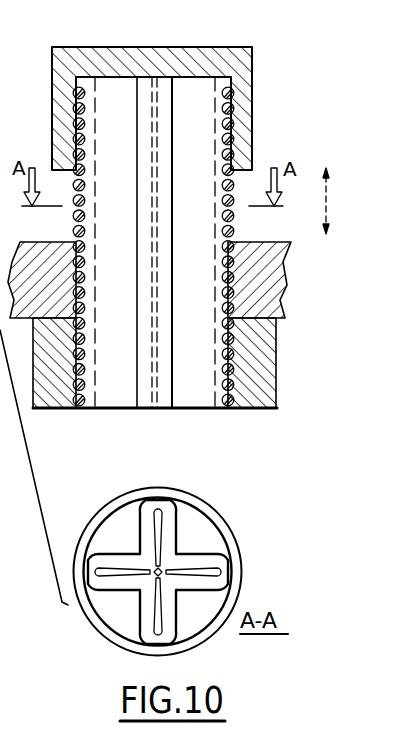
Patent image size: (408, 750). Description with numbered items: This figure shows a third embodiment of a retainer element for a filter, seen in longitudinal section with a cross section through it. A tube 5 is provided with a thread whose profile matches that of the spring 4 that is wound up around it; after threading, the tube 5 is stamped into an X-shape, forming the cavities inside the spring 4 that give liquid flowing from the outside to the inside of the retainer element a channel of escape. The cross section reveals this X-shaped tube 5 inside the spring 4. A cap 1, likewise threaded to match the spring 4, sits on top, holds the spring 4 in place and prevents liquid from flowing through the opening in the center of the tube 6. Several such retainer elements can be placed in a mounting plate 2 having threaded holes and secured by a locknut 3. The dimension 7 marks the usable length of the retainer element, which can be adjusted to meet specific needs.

The cap 1 is at (246, 78).
The mounting plate 2 is at (272, 286).
The locknut 3 is at (263, 366).
The spring 4 is at (94, 519).
The tube 5 is at (173, 510).
The opening in the center of the tube 6 is at (161, 569).
The usable length of the retainer element 7 is at (319, 201).